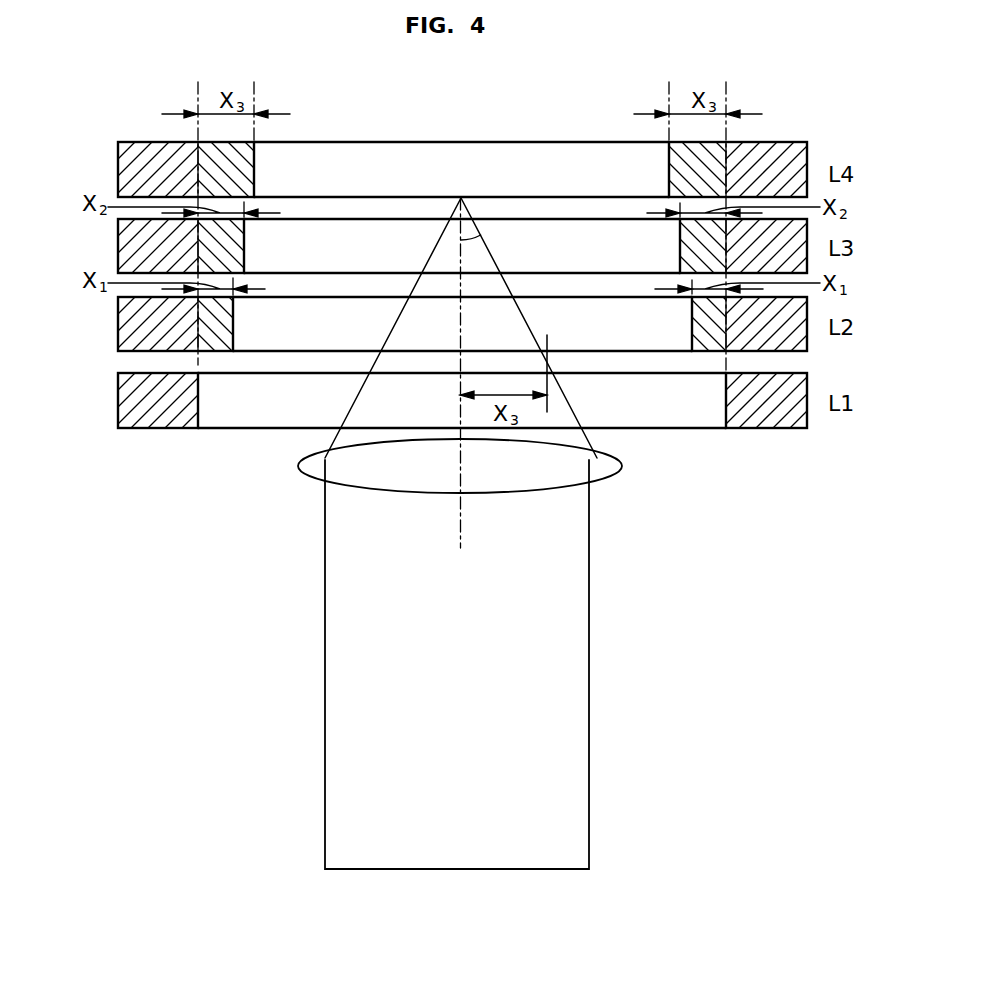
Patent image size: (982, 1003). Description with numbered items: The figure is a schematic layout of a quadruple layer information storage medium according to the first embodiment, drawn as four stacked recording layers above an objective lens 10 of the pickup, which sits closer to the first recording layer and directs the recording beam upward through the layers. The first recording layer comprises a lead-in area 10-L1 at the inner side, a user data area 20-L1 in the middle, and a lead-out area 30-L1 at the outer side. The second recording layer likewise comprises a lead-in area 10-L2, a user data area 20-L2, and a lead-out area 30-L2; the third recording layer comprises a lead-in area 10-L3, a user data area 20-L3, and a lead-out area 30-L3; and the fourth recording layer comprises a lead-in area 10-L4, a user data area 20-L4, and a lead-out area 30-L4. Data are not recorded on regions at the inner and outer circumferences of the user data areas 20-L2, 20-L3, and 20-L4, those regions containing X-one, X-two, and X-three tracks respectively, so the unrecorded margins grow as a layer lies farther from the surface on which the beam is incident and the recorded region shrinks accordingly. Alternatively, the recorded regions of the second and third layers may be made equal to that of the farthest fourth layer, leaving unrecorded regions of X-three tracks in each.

The objective lens 10 is at (606, 476).
The lead-in area 10-L4 is at (142, 145).
The lead-in area 10-L3 is at (130, 245).
The lead-in area 10-L2 is at (130, 322).
The lead-in area 10-L1 is at (130, 402).
The user data area 20-L4 is at (468, 155).
The user data area 20-L3 is at (335, 235).
The user data area 20-L2 is at (272, 337).
The user data area 20-L1 is at (282, 410).
The lead-out area 30-L4 is at (777, 150).
The lead-out area 30-L3 is at (797, 230).
The lead-out area 30-L2 is at (792, 335).
The lead-out area 30-L1 is at (735, 423).